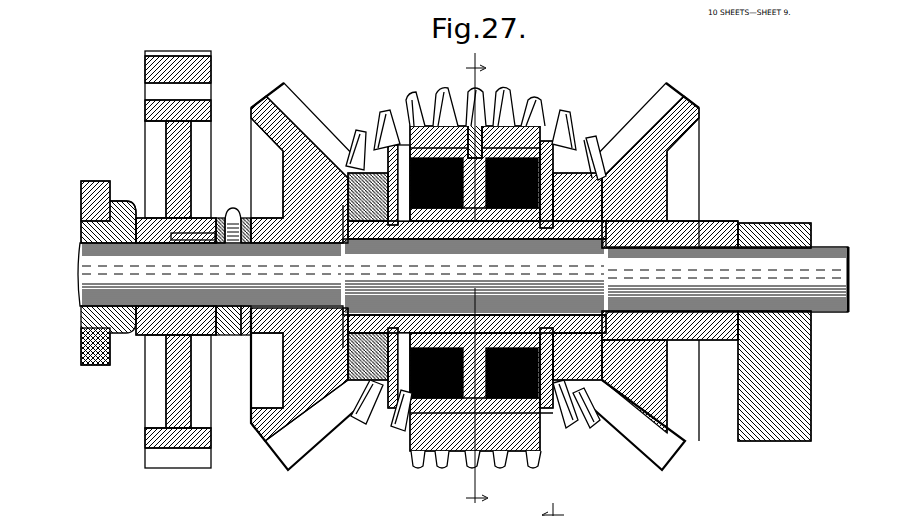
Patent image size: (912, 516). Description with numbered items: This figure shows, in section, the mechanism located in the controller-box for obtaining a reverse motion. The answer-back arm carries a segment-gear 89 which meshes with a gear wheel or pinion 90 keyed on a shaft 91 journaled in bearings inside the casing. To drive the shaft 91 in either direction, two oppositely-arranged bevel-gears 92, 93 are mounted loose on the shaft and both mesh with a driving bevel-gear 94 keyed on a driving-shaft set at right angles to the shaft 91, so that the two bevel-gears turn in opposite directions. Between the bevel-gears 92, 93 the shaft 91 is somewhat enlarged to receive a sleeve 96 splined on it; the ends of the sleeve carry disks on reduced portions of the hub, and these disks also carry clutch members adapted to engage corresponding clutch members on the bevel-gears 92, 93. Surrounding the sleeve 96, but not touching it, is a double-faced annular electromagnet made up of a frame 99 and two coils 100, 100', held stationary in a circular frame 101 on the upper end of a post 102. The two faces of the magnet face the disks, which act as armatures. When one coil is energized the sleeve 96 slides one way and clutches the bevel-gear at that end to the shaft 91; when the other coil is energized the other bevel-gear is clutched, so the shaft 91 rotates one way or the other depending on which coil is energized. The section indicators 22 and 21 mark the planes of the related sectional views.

The segment-gear 89 is at (203, 55).
The gear wheel or pinion 90 is at (137, 120).
The shaft 91 is at (463, 277).
The bevel-gear 92 is at (290, 104).
The bevel-gear 93 is at (661, 101).
The driving bevel-gear 94 is at (537, 105).
The sleeve 96 is at (435, 223).
The frame 99 is at (452, 450).
The coil 100 is at (368, 420).
The coil 100' is at (587, 416).
The circular frame 101 is at (510, 115).
The post 102 is at (513, 447).
The section line 22- 22 is at (470, 284).
The section line 21- 21 is at (553, 504).